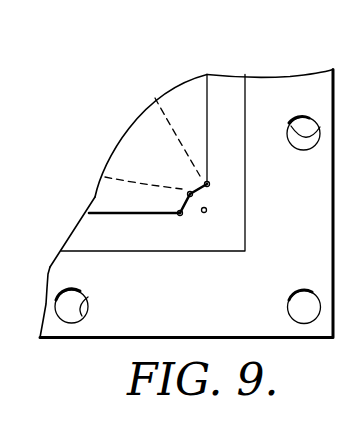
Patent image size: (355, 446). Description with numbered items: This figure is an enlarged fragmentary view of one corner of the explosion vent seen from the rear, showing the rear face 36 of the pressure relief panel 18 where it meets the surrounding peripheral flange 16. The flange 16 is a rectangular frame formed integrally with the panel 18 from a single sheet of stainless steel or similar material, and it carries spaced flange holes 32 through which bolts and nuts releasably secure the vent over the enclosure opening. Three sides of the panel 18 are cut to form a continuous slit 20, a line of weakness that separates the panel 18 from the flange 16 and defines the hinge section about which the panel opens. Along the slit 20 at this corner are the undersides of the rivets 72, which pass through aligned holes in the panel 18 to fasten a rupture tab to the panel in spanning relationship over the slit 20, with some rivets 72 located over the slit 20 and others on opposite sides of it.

The peripheral flange 16 is at (117, 335).
The pressure relief panel 18 is at (140, 118).
The slit 20 is at (107, 212).
The flange holes 32 is at (296, 120).
The rear face 36 is at (175, 93).
The rivets 72 is at (206, 182).